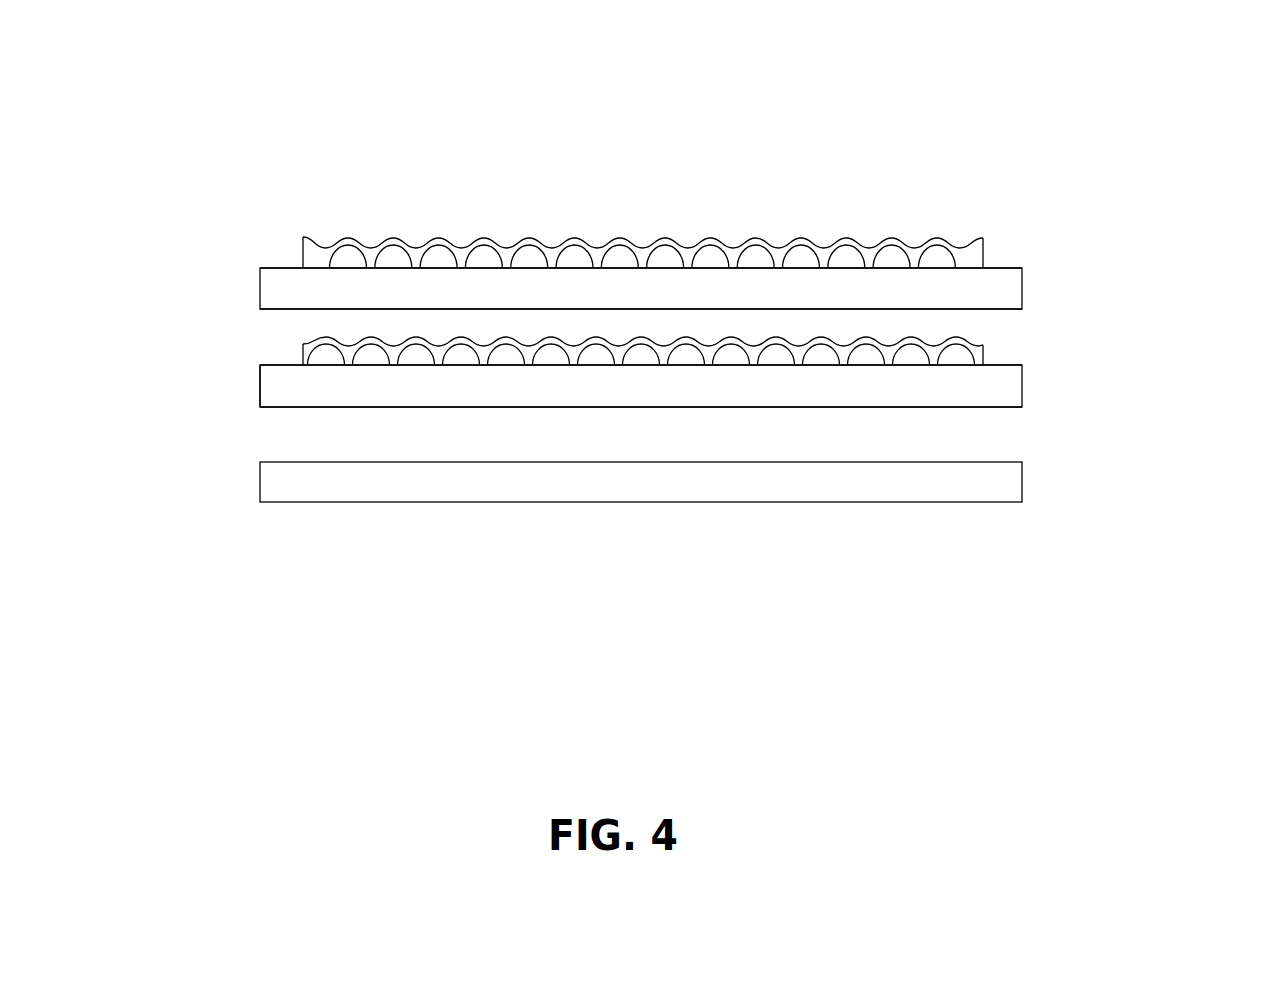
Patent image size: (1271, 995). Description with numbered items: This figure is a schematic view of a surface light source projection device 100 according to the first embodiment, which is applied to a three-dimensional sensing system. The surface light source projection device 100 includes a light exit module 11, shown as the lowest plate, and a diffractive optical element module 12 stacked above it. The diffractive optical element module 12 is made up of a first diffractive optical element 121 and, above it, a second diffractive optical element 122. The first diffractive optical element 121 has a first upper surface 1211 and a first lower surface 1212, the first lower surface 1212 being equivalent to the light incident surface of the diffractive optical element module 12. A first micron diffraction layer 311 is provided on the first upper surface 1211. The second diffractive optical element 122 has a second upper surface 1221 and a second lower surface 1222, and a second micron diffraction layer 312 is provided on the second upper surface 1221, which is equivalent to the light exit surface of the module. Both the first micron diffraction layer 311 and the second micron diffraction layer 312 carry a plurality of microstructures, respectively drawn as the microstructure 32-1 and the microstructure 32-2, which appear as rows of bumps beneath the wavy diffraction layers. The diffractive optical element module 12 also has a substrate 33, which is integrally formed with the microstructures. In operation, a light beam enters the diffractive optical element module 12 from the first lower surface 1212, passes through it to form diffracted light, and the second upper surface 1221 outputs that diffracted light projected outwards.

The surface light source projection device 100 is at (108, 69).
The light exit module 11 is at (1022, 482).
The diffractive optical element module 12 is at (1185, 192).
The first diffractive optical element 121 is at (1022, 387).
The first upper surface 1211 is at (280, 365).
The first lower surface 1212 is at (280, 407).
The second diffractive optical element 122 is at (1022, 287).
The second upper surface 1221 is at (283, 268).
The second lower surface 1222 is at (275, 309).
The first micron diffraction layer 311 is at (983, 357).
The second micron diffraction layer 312 is at (937, 238).
The microstructure 32-1 is at (647, 343).
The microstructure 32-2 is at (713, 243).
The substrate 33 is at (258, 385).